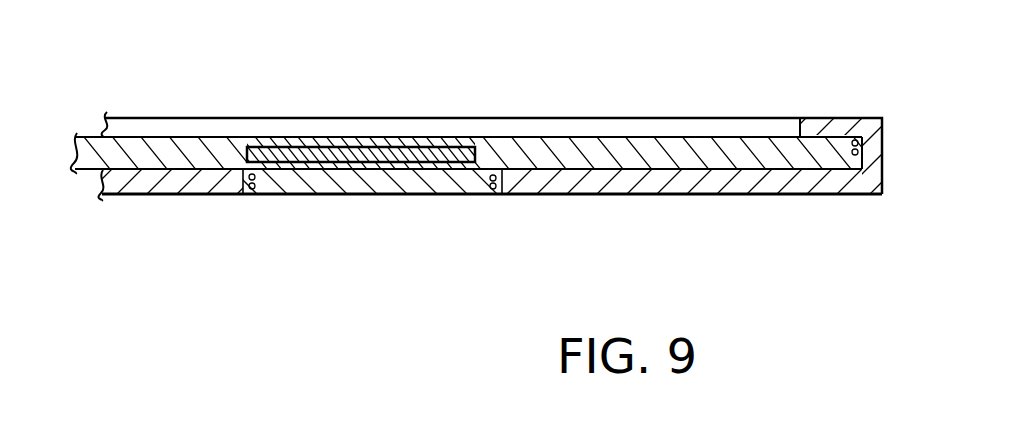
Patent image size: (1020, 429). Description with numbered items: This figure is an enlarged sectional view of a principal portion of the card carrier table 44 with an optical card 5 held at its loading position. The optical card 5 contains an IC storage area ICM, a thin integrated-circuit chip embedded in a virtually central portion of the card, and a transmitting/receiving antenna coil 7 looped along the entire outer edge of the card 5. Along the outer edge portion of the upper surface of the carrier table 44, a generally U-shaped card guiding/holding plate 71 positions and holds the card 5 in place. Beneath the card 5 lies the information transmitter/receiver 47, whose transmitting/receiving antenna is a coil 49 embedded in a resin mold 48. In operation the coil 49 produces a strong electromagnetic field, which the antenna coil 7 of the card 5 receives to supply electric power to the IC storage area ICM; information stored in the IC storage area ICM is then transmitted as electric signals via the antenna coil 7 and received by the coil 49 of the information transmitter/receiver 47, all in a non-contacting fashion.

The optical card 5 is at (96, 143).
The IC storage area ICM is at (452, 147).
The card guiding/holding plate 71 is at (822, 127).
The card carrier table 44 is at (871, 110).
The antenna coil 7 is at (872, 148).
The information transmitter/receiver 47 is at (447, 213).
The resin mold 48 is at (393, 188).
The coil 49 is at (253, 192).